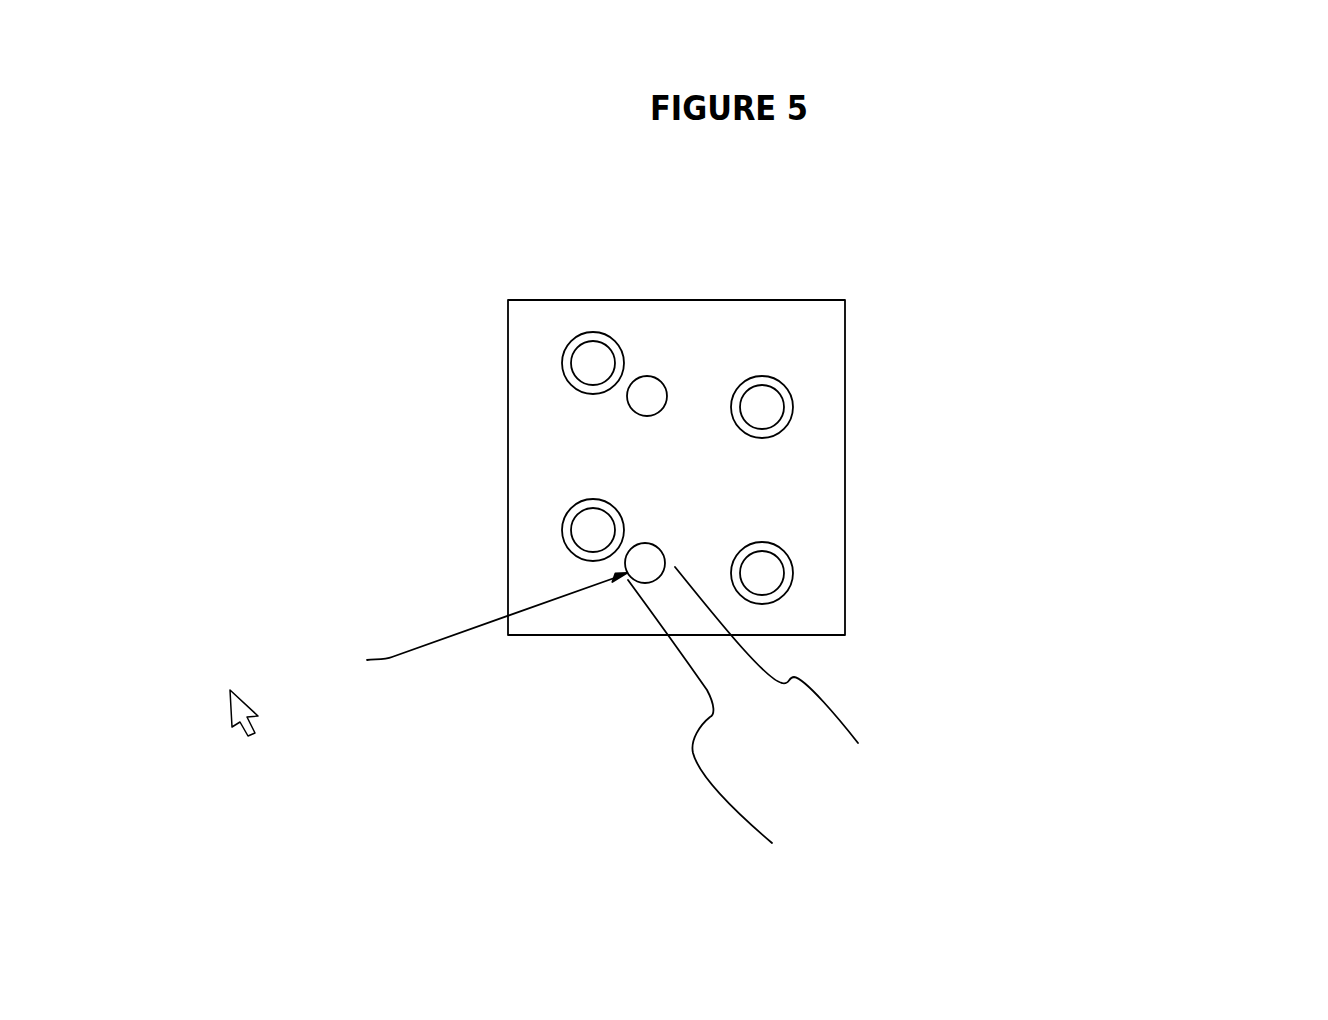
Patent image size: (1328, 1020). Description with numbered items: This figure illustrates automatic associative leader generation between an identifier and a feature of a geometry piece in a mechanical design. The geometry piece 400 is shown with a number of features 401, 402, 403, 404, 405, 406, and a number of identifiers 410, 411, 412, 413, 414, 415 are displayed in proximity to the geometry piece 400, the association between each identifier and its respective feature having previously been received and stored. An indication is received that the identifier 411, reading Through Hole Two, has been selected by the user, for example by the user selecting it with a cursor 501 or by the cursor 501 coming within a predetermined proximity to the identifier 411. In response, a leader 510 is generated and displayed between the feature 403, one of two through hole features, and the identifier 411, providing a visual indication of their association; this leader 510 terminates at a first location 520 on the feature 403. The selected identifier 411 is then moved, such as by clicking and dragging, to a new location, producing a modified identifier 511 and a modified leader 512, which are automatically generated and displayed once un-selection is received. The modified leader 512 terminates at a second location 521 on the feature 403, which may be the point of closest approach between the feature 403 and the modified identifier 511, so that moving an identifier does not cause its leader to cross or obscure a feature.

The geometry piece 400 is at (845, 550).
The feature 401 is at (792, 395).
The feature 402 is at (790, 587).
The feature 403 is at (657, 580).
The feature 404 is at (568, 510).
The feature 405 is at (568, 362).
The feature 406 is at (645, 372).
The identifier 410 is at (853, 208).
The identifier 411 is at (1128, 437).
The identifier 412 is at (1190, 545).
The identifier 413 is at (430, 730).
The identifier 414 is at (167, 483).
The identifier 415 is at (172, 352).
The cursor 501 is at (240, 733).
The leader 510 is at (877, 447).
The modified identifier 511 is at (165, 657).
The modified leader 512 is at (468, 628).
The first location 520 is at (793, 669).
The second location 521 is at (714, 729).